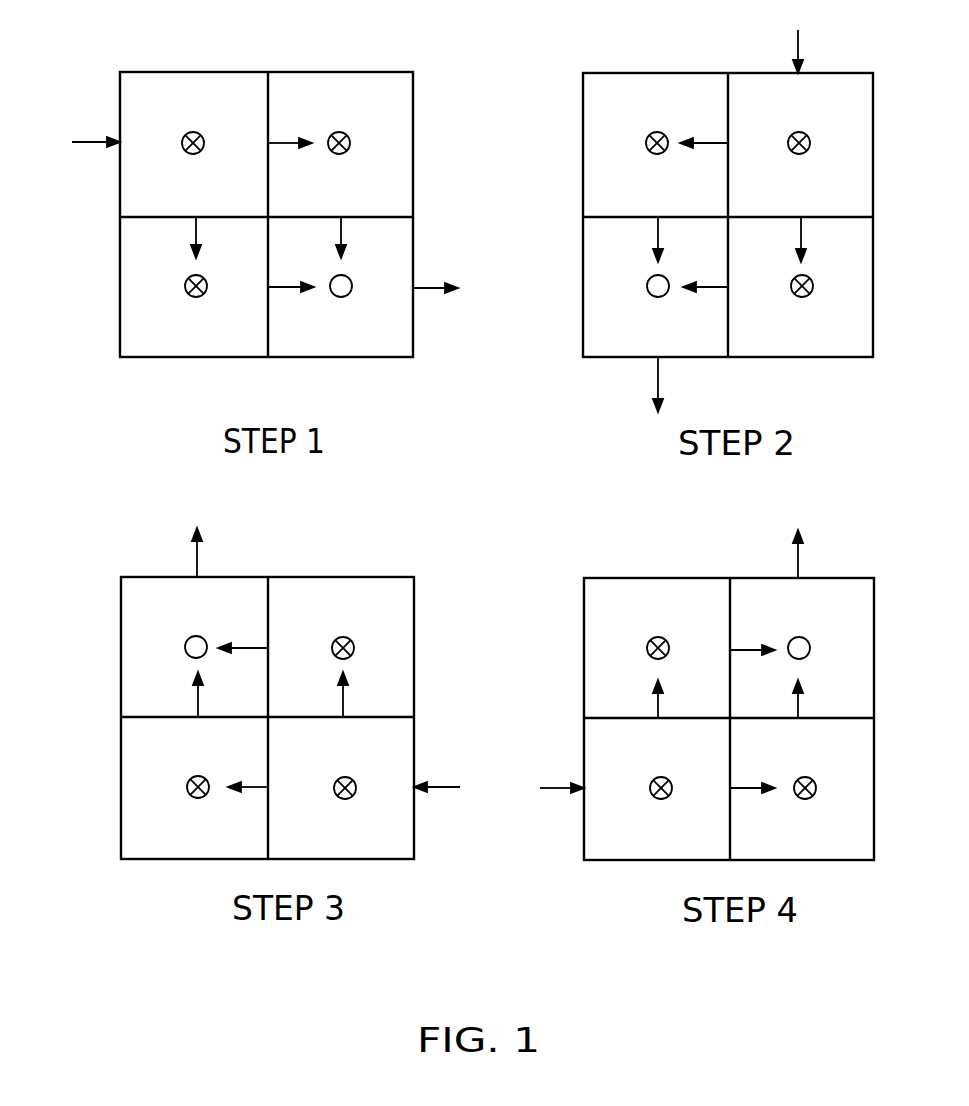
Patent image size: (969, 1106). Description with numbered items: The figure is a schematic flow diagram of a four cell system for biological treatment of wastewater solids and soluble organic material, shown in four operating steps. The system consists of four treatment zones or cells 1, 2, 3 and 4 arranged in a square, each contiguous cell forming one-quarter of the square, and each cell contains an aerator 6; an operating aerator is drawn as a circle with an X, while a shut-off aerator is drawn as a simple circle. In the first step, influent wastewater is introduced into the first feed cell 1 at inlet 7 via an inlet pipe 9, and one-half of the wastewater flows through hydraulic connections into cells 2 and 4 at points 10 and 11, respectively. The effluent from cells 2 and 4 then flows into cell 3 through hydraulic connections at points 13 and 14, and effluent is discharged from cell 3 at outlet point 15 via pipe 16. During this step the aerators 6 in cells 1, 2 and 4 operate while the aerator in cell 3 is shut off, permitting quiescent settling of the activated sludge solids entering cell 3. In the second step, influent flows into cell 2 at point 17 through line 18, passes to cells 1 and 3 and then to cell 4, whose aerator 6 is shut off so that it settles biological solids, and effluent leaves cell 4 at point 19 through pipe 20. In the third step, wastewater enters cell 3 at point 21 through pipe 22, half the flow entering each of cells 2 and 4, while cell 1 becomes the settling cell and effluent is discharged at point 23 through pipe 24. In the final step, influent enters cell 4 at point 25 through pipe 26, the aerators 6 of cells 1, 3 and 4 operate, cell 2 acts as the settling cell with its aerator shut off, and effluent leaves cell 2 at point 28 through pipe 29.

The first feed cell 1 is at (157, 78).
The cell 2 is at (339, 78).
The cell 3 is at (395, 345).
The cell 4 is at (152, 342).
The aerator 6 is at (339, 131).
The inlet 7 is at (120, 141).
The inlet pipe 9 is at (87, 143).
The point 10 is at (268, 143).
The point 11 is at (196, 217).
The point 13 is at (341, 217).
The point 14 is at (268, 287).
The outlet point 15 is at (413, 285).
The pipe 16 is at (428, 290).
The inlet point 17 is at (800, 73).
The line 18 is at (796, 48).
The outlet point 19 is at (655, 360).
The pipe 20 is at (662, 375).
The inlet point 21 is at (414, 785).
The pipe 22 is at (440, 790).
The outlet point 23 is at (200, 577).
The pipe 24 is at (197, 575).
The inlet point 25 is at (584, 785).
The pipe 26 is at (555, 788).
The outlet point 28 is at (800, 578).
The pipe 29 is at (797, 566).